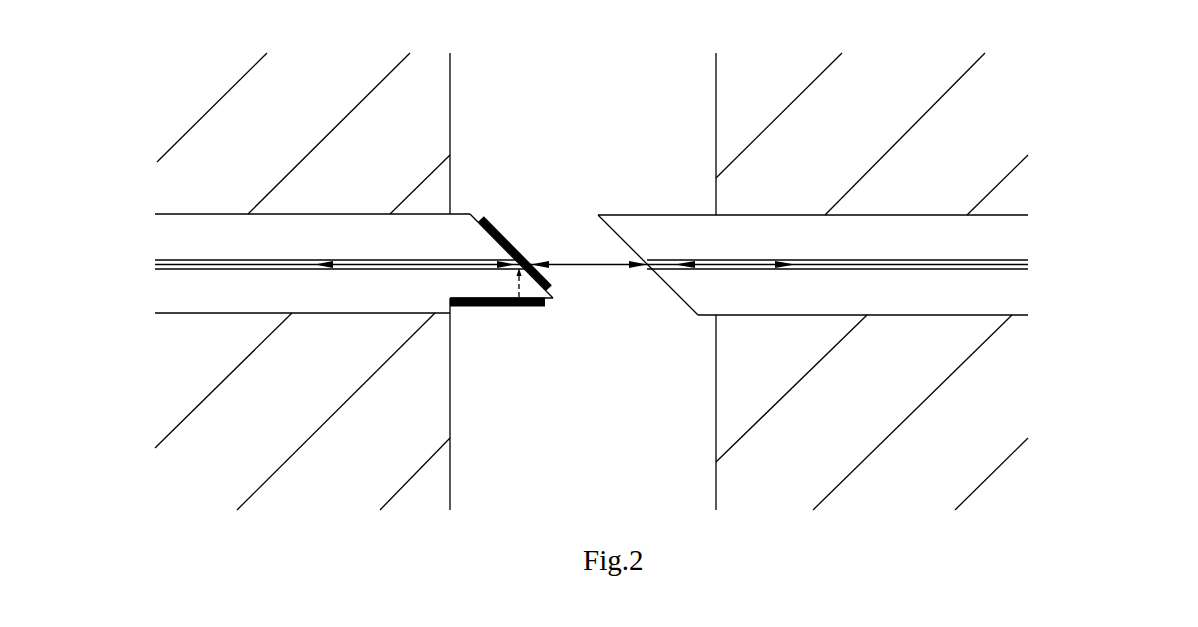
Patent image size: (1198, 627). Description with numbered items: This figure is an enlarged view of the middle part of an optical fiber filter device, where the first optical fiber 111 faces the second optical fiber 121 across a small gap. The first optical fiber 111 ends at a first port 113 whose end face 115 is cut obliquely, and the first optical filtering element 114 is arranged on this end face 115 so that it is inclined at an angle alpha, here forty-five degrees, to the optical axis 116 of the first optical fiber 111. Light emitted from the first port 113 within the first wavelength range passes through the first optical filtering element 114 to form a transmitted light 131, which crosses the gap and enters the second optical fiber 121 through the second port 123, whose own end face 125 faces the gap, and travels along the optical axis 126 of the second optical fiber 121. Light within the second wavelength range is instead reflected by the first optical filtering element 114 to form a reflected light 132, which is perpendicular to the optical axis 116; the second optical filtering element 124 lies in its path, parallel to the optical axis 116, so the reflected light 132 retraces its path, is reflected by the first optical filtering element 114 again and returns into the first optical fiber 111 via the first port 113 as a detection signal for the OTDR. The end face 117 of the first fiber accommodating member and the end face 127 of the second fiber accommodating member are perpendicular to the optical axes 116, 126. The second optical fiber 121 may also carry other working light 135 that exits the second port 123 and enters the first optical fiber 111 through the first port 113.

The first optical fiber 111 is at (240, 230).
The first port 113 is at (450, 325).
The first optical filtering element 114 is at (502, 235).
The end face of the first port 115 is at (484, 231).
The optical axis of the first optical fiber 116 is at (285, 265).
The end face of the first fiber accommodating member 117 is at (450, 438).
The second optical fiber 121 is at (925, 238).
The second port 123 is at (670, 250).
The second optical filtering element 124 is at (500, 307).
The end face of the second port 125 is at (621, 242).
The optical axis of the second optical fiber 126 is at (932, 266).
The end face of the second fiber accommodating member 127 is at (716, 447).
The transmitted light 131 is at (585, 262).
The reflected light 132 is at (530, 308).
The other working light 135 is at (713, 263).